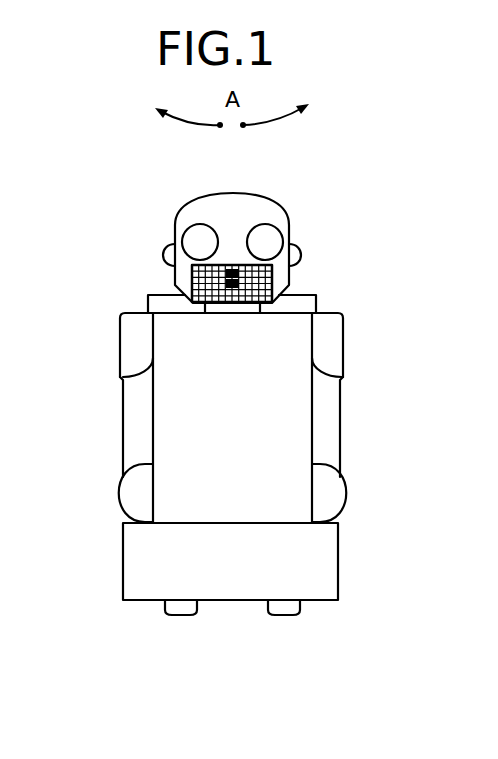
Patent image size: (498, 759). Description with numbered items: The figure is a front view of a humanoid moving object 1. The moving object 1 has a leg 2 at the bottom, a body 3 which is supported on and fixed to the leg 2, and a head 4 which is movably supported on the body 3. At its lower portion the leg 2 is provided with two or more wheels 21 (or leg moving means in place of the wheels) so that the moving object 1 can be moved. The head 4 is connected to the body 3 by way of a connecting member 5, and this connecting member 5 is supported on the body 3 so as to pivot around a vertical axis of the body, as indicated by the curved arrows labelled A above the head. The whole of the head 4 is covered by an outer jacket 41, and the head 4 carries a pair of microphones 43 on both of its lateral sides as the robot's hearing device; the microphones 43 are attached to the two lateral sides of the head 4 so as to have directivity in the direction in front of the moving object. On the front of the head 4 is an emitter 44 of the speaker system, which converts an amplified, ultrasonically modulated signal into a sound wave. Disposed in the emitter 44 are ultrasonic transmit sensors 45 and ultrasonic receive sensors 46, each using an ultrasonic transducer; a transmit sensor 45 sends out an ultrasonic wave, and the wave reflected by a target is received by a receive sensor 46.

The moving object 1 is at (257, 182).
The leg 2 is at (223, 605).
The wheels 21 is at (175, 615).
The body 3 is at (122, 423).
The head 4 is at (285, 210).
The outer jacket 41 is at (185, 208).
The microphones 43 is at (162, 255).
The emitter 44 is at (272, 275).
The ultrasonic transmit sensors 45 is at (227, 275).
The ultrasonic receive sensors 46 is at (232, 283).
The connecting member 5 is at (237, 312).